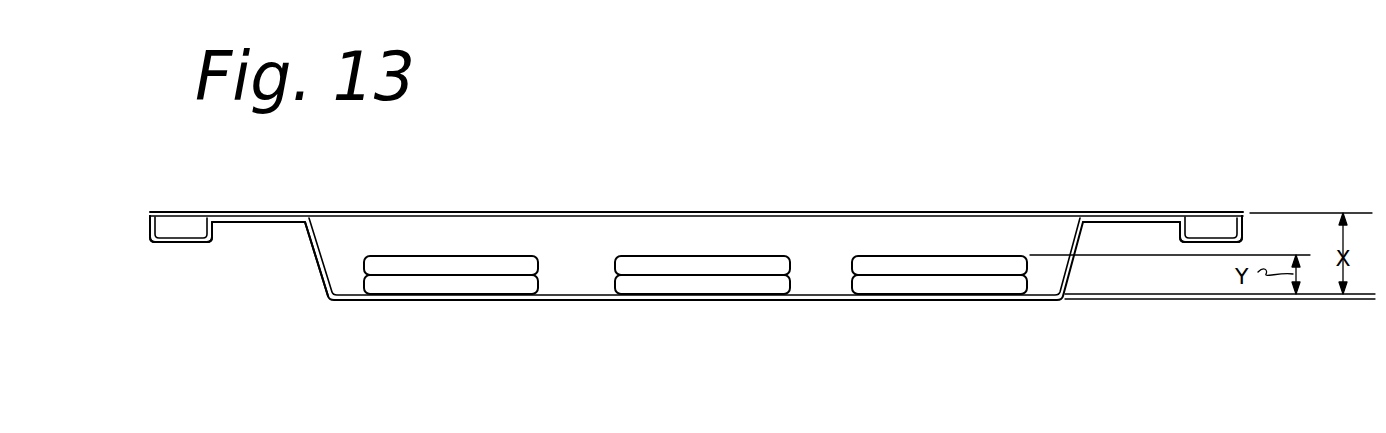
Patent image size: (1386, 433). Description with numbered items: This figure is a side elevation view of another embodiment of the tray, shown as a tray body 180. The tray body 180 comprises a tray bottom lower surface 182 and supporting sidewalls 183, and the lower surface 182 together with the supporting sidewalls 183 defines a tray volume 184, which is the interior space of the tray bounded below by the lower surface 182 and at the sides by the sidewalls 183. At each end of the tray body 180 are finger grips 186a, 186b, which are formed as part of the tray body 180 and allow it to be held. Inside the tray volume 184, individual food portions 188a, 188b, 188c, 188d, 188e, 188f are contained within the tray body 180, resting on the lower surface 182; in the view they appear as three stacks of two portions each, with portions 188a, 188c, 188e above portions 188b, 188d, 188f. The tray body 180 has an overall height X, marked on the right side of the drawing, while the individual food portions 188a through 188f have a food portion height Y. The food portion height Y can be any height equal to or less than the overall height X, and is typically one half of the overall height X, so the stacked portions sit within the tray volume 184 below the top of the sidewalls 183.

The tray body 180 is at (1098, 140).
The tray bottom lower surface 182 is at (342, 290).
The supporting sidewalls 183 is at (315, 258).
The tray volume 184 is at (598, 250).
The finger grip 186a is at (183, 229).
The finger grip 186b is at (1212, 228).
The individual food portion 188a is at (447, 265).
The individual food portion 188b is at (466, 283).
The individual food portion 188c is at (712, 265).
The individual food portion 188d is at (736, 283).
The individual food portion 188e is at (965, 265).
The individual food portion 188f is at (990, 283).